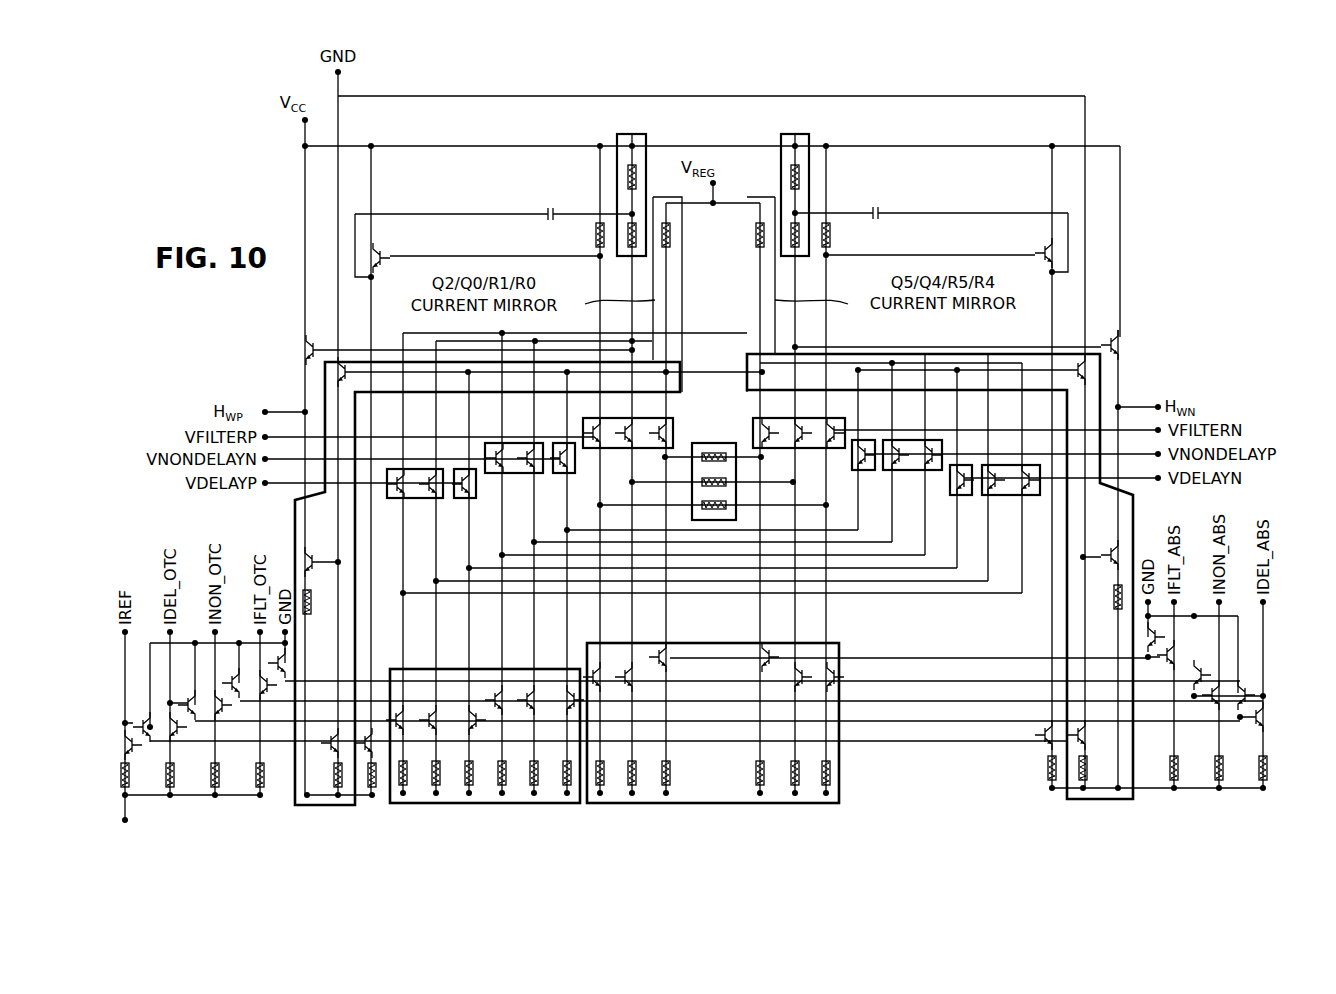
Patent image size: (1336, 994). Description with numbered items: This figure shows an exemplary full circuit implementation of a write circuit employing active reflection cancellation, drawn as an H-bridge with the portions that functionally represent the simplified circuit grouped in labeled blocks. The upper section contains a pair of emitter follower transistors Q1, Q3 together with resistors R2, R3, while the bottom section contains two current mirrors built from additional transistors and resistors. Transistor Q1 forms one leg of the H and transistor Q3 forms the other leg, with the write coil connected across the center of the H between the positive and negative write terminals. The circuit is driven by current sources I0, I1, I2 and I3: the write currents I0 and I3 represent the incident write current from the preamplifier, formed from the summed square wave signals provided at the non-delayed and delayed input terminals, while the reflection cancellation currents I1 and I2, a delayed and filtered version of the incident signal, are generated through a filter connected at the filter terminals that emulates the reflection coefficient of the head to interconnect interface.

The emitter follower transistor Q1 is at (296, 350).
The emitter follower transistor Q3 is at (1124, 345).
The resistor R2 is at (795, 134).
The resistor R3 is at (636, 134).
The current source I0 is at (963, 497).
The current source I1 is at (620, 450).
The current source I2 is at (813, 450).
The current source I3 is at (1008, 497).